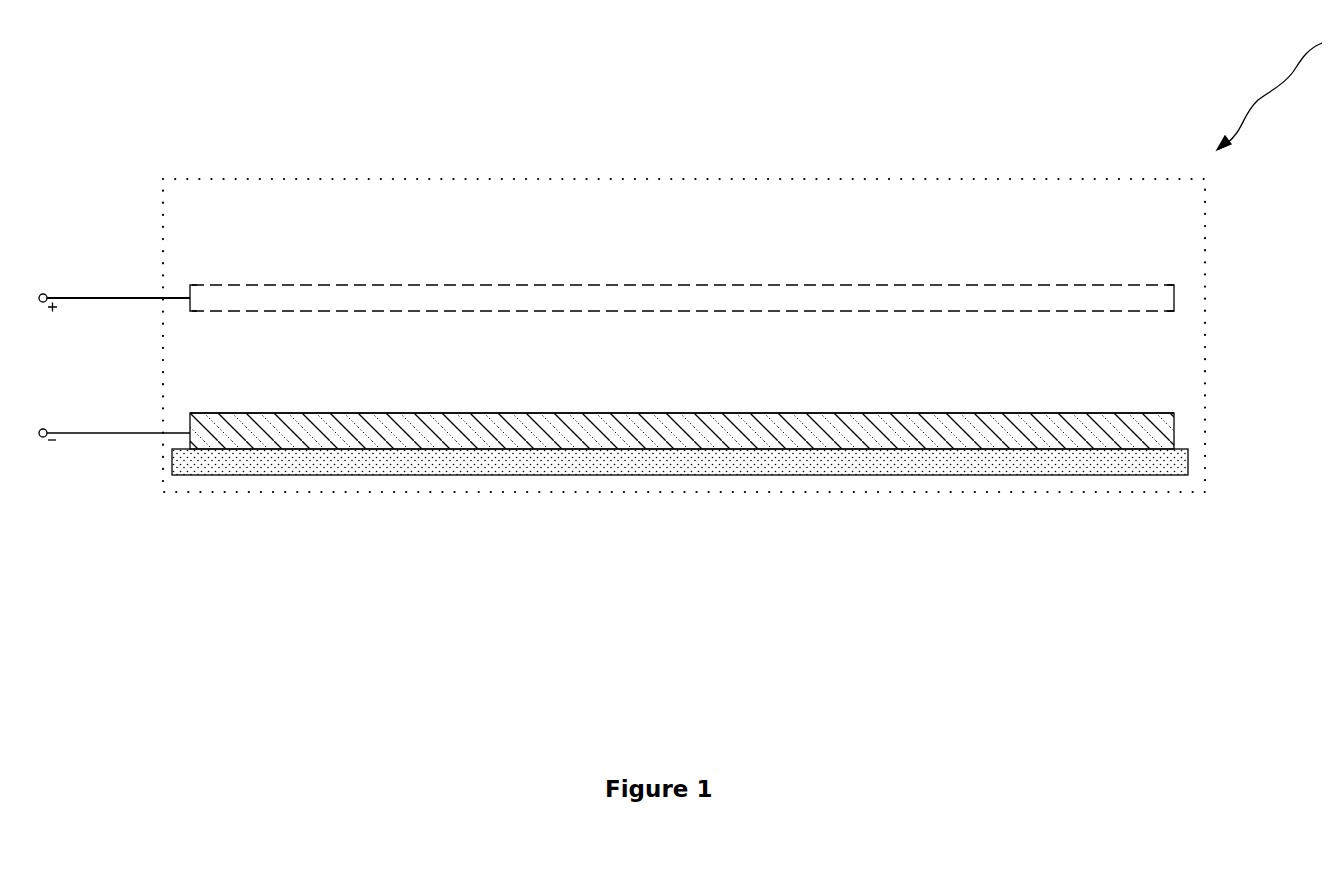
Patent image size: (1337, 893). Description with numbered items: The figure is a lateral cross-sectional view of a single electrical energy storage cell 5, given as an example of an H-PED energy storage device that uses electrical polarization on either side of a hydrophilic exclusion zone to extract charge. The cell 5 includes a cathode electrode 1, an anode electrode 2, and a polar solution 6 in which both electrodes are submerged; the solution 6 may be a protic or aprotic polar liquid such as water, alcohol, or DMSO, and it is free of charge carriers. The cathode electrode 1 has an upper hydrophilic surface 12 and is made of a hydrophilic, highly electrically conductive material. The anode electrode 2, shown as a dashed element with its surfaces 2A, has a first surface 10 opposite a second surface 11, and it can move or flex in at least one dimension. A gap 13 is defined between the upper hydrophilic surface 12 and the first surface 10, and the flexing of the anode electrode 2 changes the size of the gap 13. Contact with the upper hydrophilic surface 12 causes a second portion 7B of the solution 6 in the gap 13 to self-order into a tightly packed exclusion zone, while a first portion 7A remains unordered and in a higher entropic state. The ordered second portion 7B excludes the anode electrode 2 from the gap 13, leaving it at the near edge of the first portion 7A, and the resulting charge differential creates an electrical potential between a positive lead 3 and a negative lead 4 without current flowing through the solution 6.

The cathode electrode 1 is at (728, 406).
The anode electrode 2 is at (728, 299).
The perforated electrode surface 2A is at (525, 284).
The positive lead 3 is at (120, 297).
The negative lead 4 is at (137, 432).
The electrical energy storage cell 5 is at (628, 80).
The polar solution 6 is at (688, 240).
The first portion of the solution 7A is at (263, 243).
The second portion of the solution 7B is at (263, 374).
The first surface 10 is at (892, 311).
The second surface 11 is at (1018, 284).
The upper hydrophilic surface 12 is at (900, 413).
The gap 13 is at (203, 358).